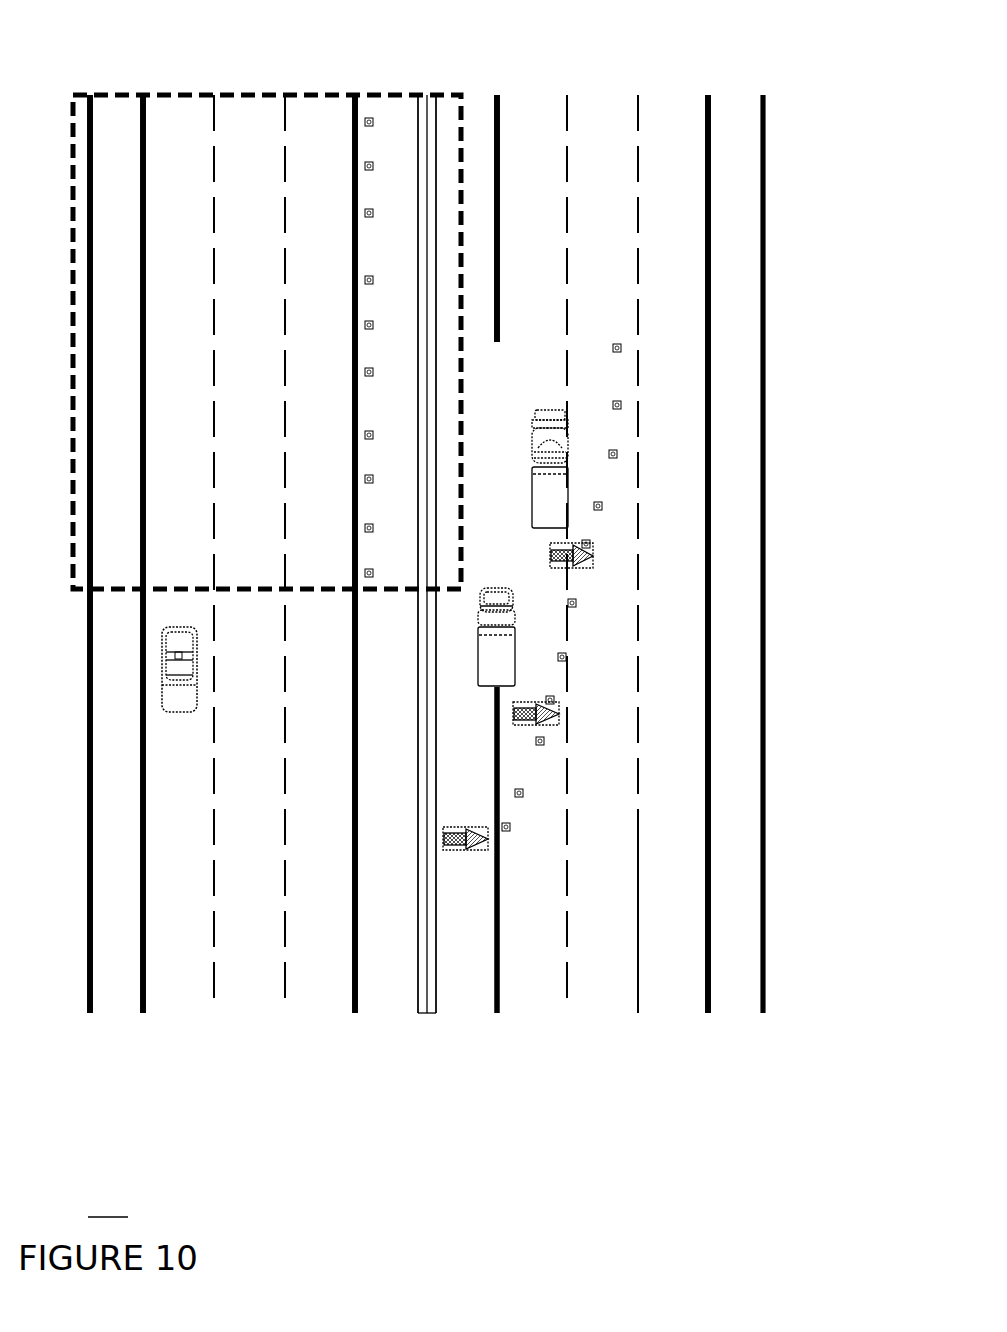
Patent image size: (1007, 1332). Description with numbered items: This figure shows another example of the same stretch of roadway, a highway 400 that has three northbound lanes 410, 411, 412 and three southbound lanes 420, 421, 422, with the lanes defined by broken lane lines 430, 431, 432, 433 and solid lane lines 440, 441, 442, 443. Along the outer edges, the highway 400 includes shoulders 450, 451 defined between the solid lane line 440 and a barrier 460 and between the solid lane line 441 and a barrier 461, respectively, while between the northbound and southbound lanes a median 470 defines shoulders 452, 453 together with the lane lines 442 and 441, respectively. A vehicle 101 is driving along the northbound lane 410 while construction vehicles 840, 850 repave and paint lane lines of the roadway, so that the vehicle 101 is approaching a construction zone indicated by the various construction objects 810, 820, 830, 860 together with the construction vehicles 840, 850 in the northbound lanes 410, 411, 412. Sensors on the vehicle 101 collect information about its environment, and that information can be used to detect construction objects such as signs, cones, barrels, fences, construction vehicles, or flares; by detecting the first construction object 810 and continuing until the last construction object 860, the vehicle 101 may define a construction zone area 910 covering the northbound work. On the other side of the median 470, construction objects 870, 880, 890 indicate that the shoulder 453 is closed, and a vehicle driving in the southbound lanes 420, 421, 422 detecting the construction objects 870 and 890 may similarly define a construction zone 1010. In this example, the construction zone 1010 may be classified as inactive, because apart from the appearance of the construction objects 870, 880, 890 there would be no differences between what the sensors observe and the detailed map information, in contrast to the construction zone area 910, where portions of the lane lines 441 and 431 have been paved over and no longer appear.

The highway 400 is at (425, 656).
The vehicle 101 is at (162, 678).
The construction zone 1010 is at (177, 592).
The northbound lane 410 is at (672, 95).
The northbound lane 411 is at (602, 95).
The northbound lane 412 is at (532, 95).
The southbound lane 420 is at (318, 95).
The southbound lane 421 is at (248, 95).
The southbound lane 422 is at (178, 95).
The broken lane line 430 is at (638, 1013).
The broken lane line 431 is at (567, 1013).
The broken lane line 432 is at (285, 1013).
The broken lane line 433 is at (214, 1013).
The solid lane line 440 is at (708, 1013).
The solid lane line 441 is at (497, 1013).
The solid lane line 442 is at (355, 1013).
The solid lane line 443 is at (143, 1013).
The shoulder 450 is at (735, 95).
The shoulder 451 is at (115, 95).
The shoulder 452 is at (390, 1012).
The shoulder 453 is at (463, 95).
The barrier 460 is at (763, 1013).
The barrier 461 is at (90, 1013).
The median 470 is at (425, 95).
The construction object 810 is at (489, 838).
The construction object 820 is at (524, 795).
The construction object 830 is at (560, 713).
The construction vehicle 840 is at (516, 633).
The construction vehicle 850 is at (569, 483).
The construction object 860 is at (622, 348).
The construction object 870 is at (365, 122).
The construction object 880 is at (365, 280).
The construction object 890 is at (365, 573).
The construction zone area 910 is at (638, 855).